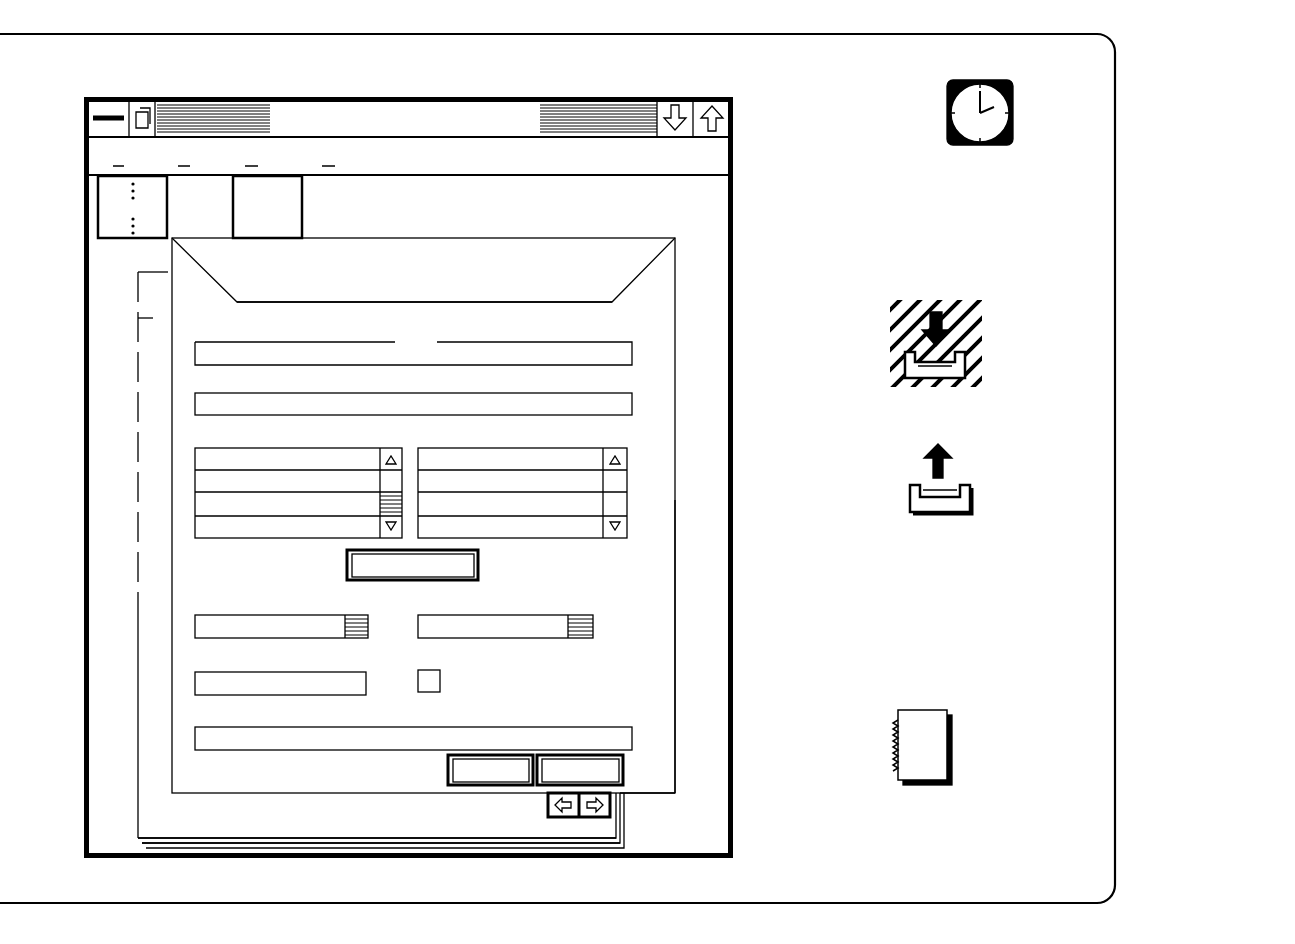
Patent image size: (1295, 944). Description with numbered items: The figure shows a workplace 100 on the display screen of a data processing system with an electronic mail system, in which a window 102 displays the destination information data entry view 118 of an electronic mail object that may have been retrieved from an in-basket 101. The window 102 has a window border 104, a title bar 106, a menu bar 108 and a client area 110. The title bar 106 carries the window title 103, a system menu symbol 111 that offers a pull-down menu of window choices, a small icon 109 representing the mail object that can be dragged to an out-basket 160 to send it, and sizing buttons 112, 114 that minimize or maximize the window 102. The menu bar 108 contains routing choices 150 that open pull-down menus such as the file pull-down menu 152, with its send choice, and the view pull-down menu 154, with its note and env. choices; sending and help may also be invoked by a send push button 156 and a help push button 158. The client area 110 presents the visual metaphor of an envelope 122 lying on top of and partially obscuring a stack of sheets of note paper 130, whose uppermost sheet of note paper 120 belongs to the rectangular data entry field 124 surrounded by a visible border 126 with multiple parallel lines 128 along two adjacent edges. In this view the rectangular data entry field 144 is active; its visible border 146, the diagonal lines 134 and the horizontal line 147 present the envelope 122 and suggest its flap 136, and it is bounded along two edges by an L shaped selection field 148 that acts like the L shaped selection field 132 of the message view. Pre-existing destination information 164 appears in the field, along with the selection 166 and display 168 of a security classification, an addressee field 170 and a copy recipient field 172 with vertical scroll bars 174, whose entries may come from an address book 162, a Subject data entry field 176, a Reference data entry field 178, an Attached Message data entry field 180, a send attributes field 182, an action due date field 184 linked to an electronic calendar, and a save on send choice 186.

The workplace 100 is at (1125, 534).
The in-basket 101 is at (965, 378).
The window 102 is at (734, 581).
The window title 103 is at (263, 103).
The window border 104 is at (735, 476).
The title bar 106 is at (590, 103).
The menu bar 108 is at (724, 152).
The small icon 109 is at (143, 103).
The client area 110 is at (713, 518).
The system menu symbol 111 is at (97, 102).
The window sizing button 112 is at (670, 102).
The window sizing button 114 is at (716, 102).
The destination information data entry view 118 is at (133, 550).
The uppermost sheet of note paper 120 is at (432, 828).
The envelope 122 is at (675, 705).
The rectangular data entry field 124 is at (152, 318).
The visible border 126 is at (137, 745).
The multiple parallel lines 128 is at (625, 820).
The stack of sheets of note paper 130 is at (137, 512).
The L shaped selection field 132 is at (178, 263).
The diagonal lines 134 is at (218, 283).
The flap 136 is at (608, 243).
The rectangular data entry field 144 is at (182, 497).
The visible border 146 is at (676, 772).
The horizontal line 147 is at (426, 303).
The L shaped selection field 148 is at (215, 828).
The routing choices 150 is at (108, 153).
The file pull-down menu 152 is at (105, 191).
The view pull-down menu 154 is at (305, 212).
The send push button 156 is at (448, 768).
The help push button 158 is at (549, 780).
The out-basket 160 is at (972, 500).
The address book 162 is at (918, 718).
The pre-existing destination information 164 is at (440, 243).
The security classification selection 166 is at (590, 640).
The security classification display 168 is at (650, 565).
The addressee field 170 is at (365, 482).
The copy recipient field 172 is at (530, 505).
The vertical scroll bar 174 is at (378, 538).
The Subject data entry field 176 is at (197, 357).
The Reference data entry field 178 is at (197, 414).
The Attached Message data entry field 180 is at (283, 752).
The send attributes field 182 is at (197, 627).
The action due date field 184 is at (367, 690).
The save on send choice 186 is at (430, 692).